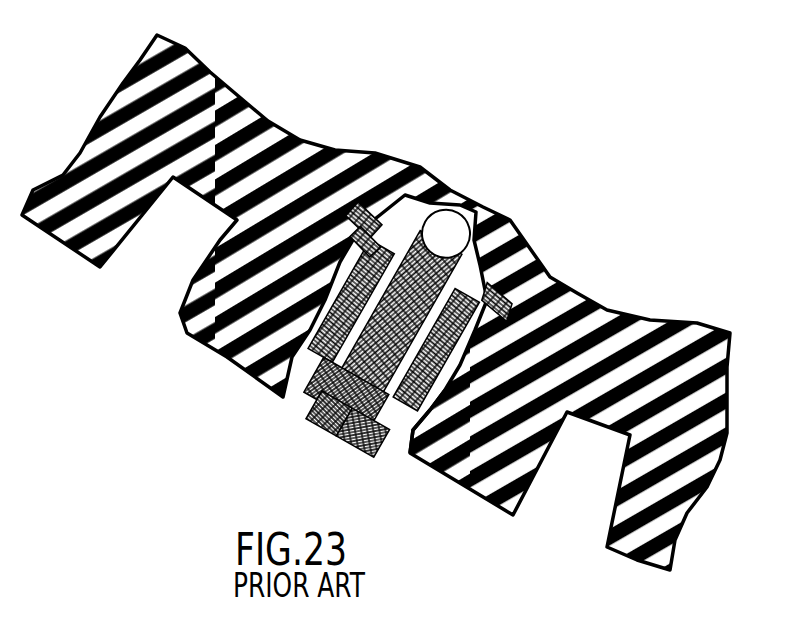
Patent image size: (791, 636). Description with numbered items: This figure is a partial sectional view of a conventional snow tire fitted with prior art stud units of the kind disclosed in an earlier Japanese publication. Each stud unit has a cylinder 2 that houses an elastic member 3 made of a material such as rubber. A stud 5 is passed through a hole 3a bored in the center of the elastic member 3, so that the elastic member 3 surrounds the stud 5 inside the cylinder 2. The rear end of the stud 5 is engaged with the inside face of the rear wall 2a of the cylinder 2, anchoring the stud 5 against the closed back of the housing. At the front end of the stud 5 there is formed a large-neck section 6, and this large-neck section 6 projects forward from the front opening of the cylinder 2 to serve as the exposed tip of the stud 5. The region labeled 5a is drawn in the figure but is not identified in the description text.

The cylinder 2 is at (300, 383).
The rear wall 2a is at (503, 287).
The elastic member 3 is at (401, 260).
The hole 3a is at (352, 238).
The stud 5 is at (373, 450).
The tooth 5a is at (438, 447).
The large-neck section 6 is at (305, 408).